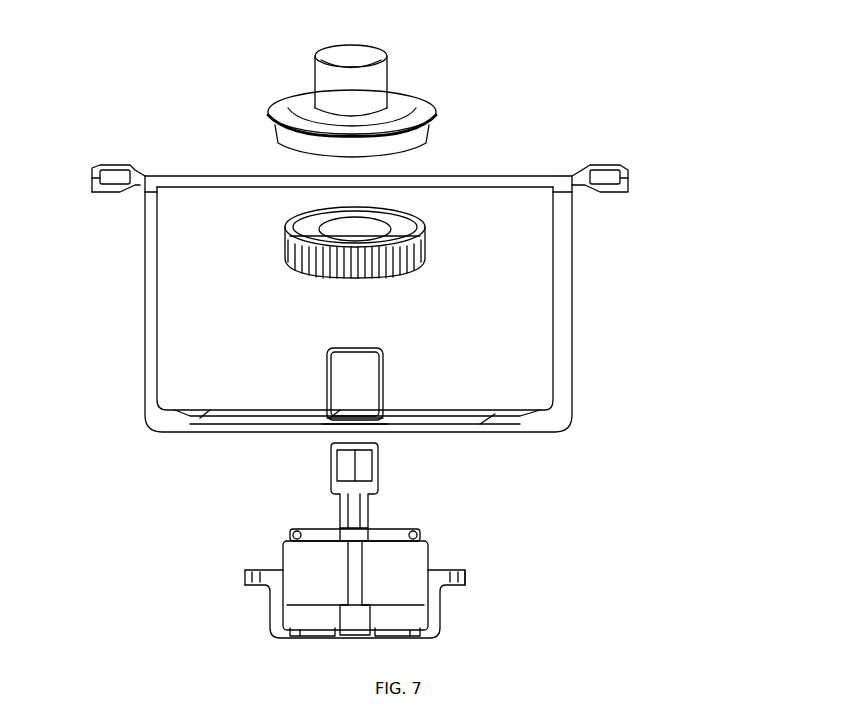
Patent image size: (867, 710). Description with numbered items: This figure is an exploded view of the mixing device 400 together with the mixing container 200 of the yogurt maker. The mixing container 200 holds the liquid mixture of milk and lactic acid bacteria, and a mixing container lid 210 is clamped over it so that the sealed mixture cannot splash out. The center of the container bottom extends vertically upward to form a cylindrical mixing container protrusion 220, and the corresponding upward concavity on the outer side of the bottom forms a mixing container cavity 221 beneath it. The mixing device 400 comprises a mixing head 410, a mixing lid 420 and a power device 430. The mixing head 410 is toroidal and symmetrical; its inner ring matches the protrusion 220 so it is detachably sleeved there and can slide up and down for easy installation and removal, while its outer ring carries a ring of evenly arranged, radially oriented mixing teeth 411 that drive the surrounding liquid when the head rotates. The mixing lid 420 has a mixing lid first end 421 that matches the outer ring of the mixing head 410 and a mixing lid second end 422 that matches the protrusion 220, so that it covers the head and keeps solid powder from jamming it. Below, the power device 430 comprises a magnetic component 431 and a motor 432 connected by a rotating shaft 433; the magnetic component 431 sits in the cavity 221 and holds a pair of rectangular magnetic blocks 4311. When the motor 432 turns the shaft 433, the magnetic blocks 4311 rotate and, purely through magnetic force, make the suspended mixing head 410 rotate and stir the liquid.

The mixing container 200 is at (172, 248).
The mixing container lid 210 is at (197, 185).
The mixing container protrusion 220 is at (327, 352).
The mixing container cavity 221 is at (347, 383).
The mixing device 400 is at (663, 60).
The mixing head 410 is at (393, 230).
The mixing teeth 411 is at (430, 268).
The mixing lid 420 is at (553, 17).
The mixing lid first end 421 is at (385, 143).
The mixing lid second end 422 is at (352, 85).
The power device 430 is at (545, 612).
The magnetic component 431 is at (378, 487).
The magnetic blocks 4311 is at (349, 456).
The rotating shaft 433 is at (390, 545).
The motor 432 is at (398, 578).